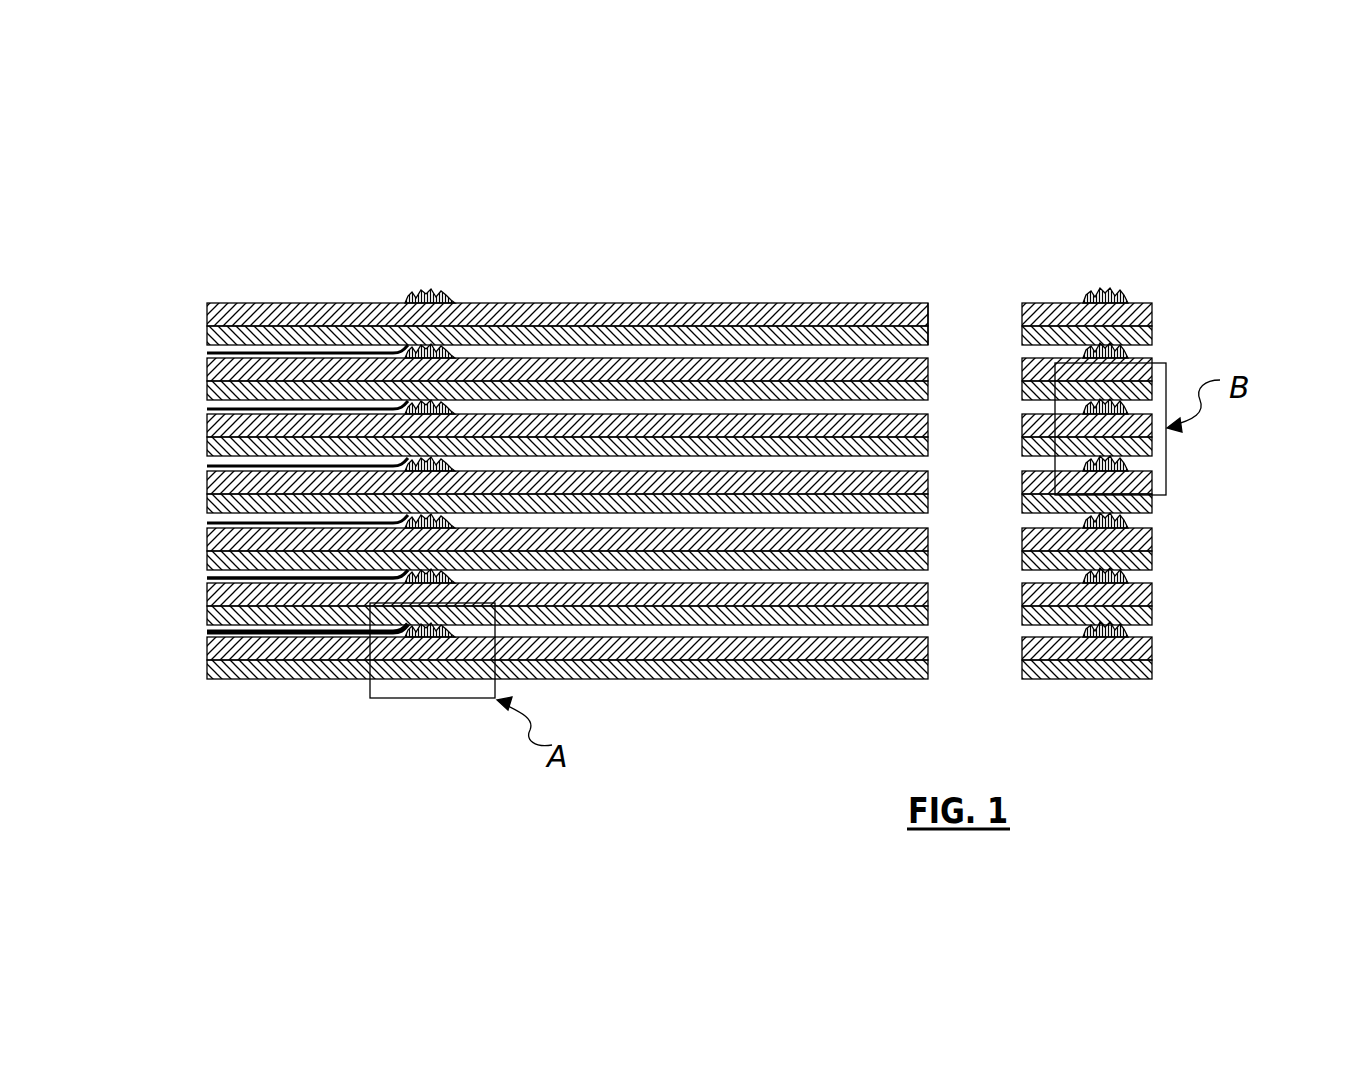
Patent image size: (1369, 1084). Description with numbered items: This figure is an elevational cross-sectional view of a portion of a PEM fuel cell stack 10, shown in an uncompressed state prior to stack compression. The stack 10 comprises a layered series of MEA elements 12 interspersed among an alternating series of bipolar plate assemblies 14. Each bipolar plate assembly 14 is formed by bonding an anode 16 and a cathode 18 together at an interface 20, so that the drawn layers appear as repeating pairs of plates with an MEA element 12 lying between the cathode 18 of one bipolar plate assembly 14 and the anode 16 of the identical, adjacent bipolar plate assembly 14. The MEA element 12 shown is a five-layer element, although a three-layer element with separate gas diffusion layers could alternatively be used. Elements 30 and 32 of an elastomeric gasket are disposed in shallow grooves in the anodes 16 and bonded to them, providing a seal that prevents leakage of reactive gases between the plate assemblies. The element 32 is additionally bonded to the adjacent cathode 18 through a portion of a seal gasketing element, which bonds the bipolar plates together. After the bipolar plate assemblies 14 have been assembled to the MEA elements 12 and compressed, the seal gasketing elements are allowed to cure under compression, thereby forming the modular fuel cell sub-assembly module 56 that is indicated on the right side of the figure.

The PEM fuel cell stack 10 is at (300, 283).
The MEA element 12 is at (207, 353).
The bipolar plate assembly 14 is at (655, 487).
The anode 16 is at (660, 308).
The cathode 18 is at (928, 333).
The interface 20 is at (930, 326).
The element of elastomeric gasket 30 is at (442, 292).
The element of elastomeric gasket 32 is at (1092, 297).
The fuel cell sub-assembly module 56 is at (1182, 449).